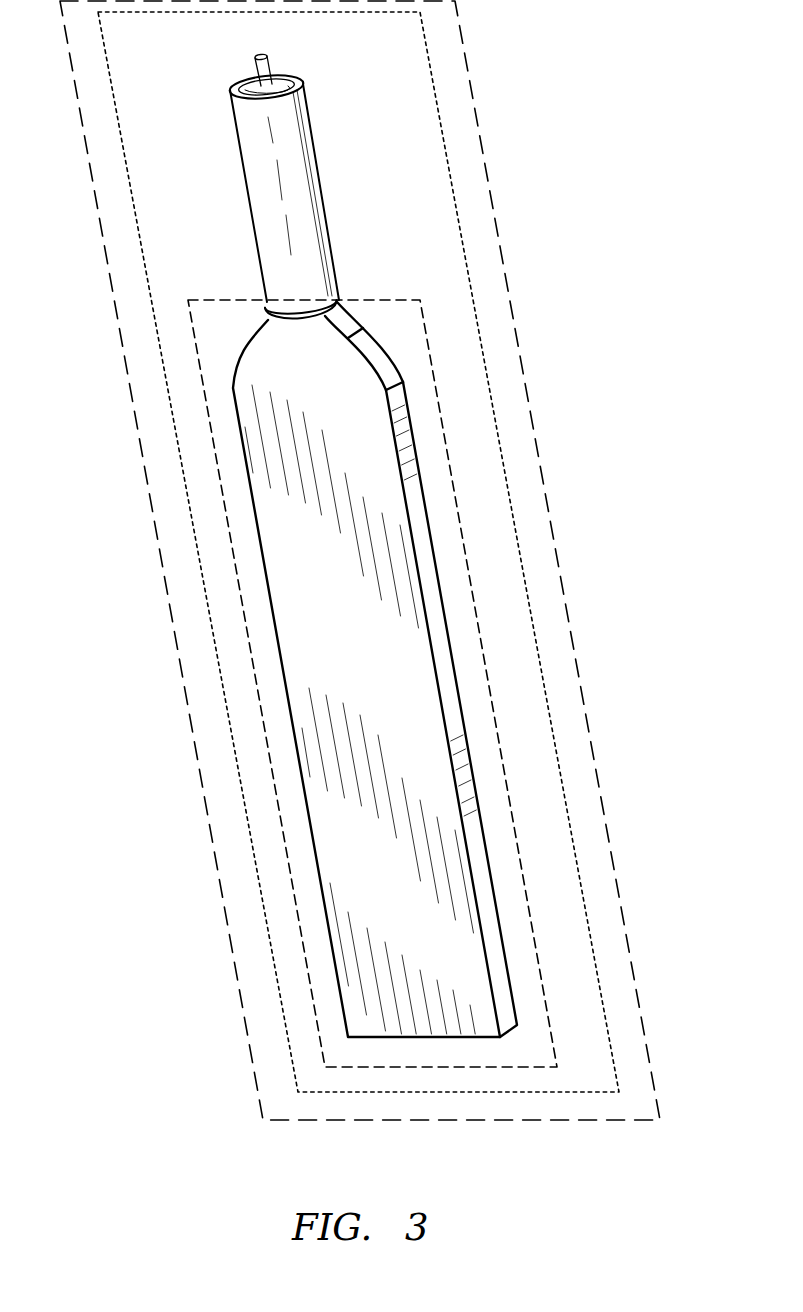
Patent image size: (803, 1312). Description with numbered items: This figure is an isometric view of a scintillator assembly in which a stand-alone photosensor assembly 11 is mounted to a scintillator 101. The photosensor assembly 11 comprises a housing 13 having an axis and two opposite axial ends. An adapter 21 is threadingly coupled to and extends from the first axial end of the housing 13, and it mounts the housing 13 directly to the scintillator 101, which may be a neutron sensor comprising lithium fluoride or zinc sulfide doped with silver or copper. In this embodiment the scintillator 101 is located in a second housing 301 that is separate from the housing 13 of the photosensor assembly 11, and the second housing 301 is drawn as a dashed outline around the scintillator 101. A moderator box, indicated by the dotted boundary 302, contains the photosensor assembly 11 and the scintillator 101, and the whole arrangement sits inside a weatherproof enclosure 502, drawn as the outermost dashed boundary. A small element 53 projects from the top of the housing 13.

The photosensor assembly 11 is at (575, 84).
The housing 13 is at (302, 132).
The adapter 21 is at (337, 300).
The dispensing pin 53 is at (268, 65).
The scintillator 101 is at (383, 354).
The second housing 301 is at (446, 444).
The intermediate package boundary 302 is at (513, 503).
The weatherproof enclosure 502 is at (561, 568).